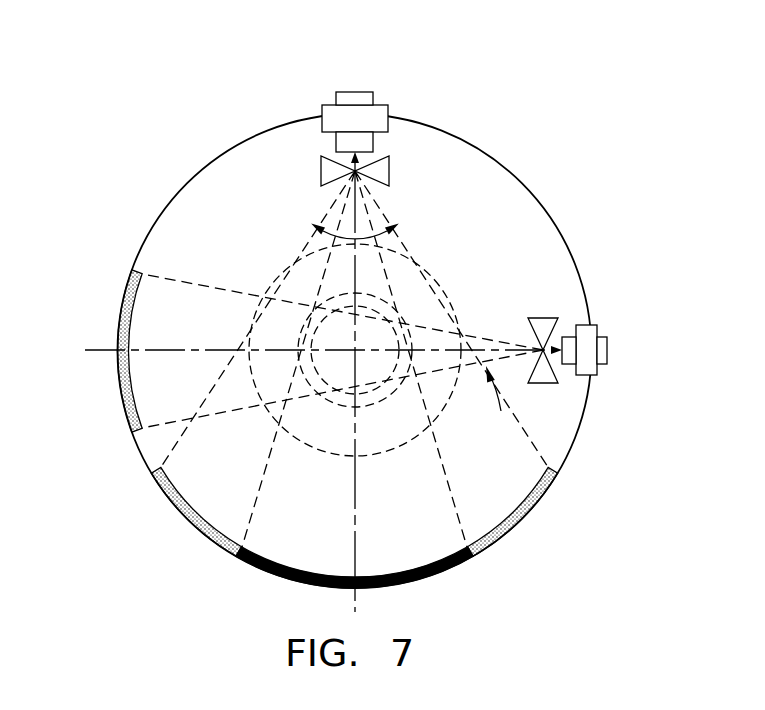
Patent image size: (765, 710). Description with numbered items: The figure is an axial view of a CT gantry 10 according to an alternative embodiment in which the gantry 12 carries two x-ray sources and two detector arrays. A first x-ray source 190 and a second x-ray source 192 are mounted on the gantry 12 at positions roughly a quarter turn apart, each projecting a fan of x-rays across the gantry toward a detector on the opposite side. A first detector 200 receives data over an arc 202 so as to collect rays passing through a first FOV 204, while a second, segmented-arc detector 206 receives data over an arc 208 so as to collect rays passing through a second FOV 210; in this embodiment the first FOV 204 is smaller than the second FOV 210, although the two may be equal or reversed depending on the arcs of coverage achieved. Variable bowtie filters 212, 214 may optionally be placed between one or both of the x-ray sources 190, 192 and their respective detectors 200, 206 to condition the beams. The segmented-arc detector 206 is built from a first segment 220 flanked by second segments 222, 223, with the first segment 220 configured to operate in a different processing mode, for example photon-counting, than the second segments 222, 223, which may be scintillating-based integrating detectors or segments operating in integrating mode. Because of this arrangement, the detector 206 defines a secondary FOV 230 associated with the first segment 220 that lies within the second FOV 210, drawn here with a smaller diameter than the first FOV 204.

The CT gantry 10 is at (175, 97).
The gantry 12 is at (543, 210).
The first x-ray source 190 is at (597, 325).
The second x-ray source 192 is at (363, 92).
The first detector 200 is at (121, 382).
The arc 202 is at (486, 323).
The first FOV 204 is at (327, 322).
The segmented-arc detector 206 is at (381, 560).
The arc 208 is at (343, 237).
The second FOV 210 is at (450, 392).
The variable bowtie filter 212 is at (388, 172).
The variable bowtie filter 214 is at (547, 385).
The first segment 220 is at (450, 570).
The second segment 222 is at (513, 530).
The second segment 223 is at (186, 518).
The secondary FOV 230 is at (373, 400).